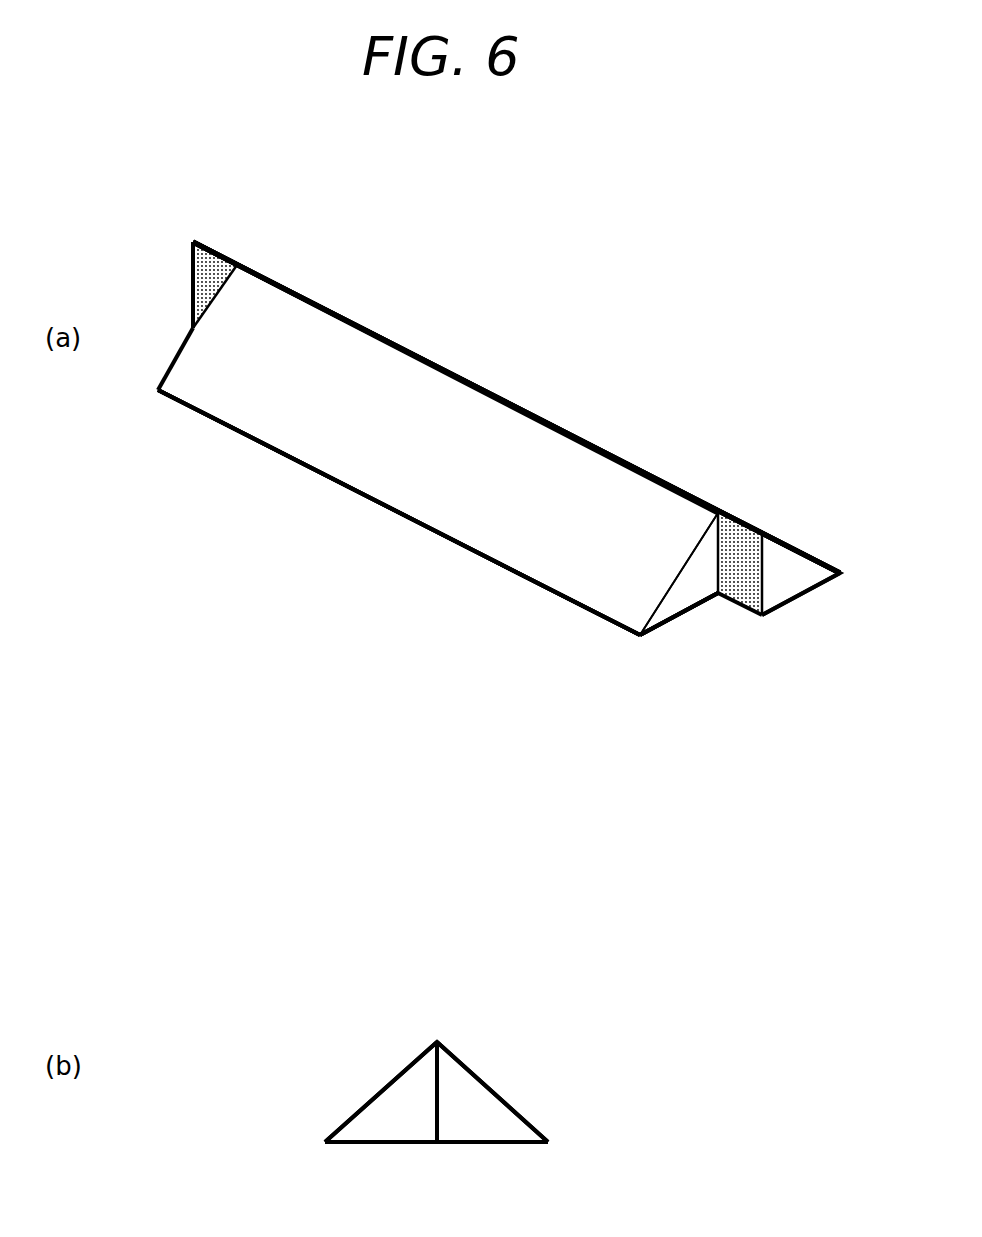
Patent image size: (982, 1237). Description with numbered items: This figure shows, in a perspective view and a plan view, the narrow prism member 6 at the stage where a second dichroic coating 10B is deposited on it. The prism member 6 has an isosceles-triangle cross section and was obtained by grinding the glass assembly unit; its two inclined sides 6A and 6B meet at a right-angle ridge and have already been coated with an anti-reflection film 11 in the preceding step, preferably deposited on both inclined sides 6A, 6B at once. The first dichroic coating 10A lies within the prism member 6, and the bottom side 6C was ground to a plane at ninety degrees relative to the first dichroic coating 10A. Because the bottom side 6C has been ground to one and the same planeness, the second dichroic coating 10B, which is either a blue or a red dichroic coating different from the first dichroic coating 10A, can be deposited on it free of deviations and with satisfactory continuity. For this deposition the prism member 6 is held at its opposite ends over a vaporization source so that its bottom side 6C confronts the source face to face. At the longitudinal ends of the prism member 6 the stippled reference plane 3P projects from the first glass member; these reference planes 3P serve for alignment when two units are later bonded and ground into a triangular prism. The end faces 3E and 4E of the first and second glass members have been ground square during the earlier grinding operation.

The prism member 6 is at (445, 348).
The reference plane 3P is at (213, 288).
The inclined side 6A is at (535, 412).
The inclined side 6B is at (428, 448).
The anti-reflection film 11 is at (499, 692).
The bottom side 6C is at (678, 620).
The second dichroic coating 10B is at (559, 896).
The first dichroic coating 10A is at (735, 510).
The end face of the first glass member 3E is at (780, 593).
The end face of the second glass member 4E is at (675, 600).